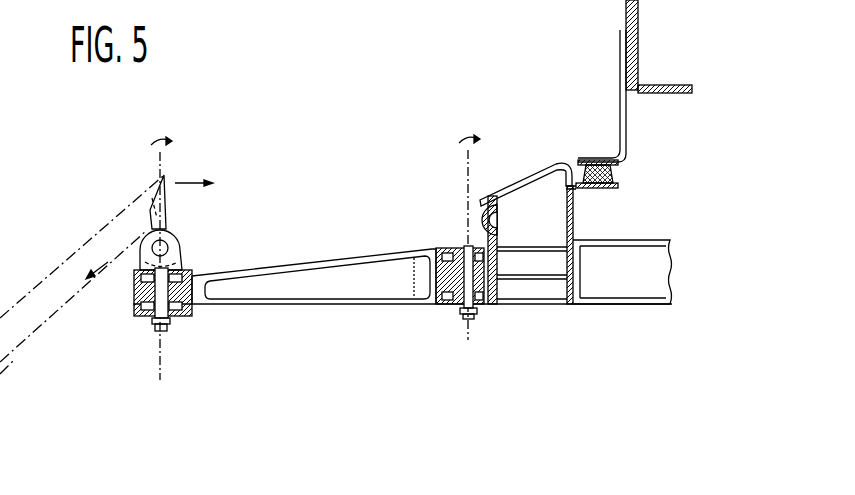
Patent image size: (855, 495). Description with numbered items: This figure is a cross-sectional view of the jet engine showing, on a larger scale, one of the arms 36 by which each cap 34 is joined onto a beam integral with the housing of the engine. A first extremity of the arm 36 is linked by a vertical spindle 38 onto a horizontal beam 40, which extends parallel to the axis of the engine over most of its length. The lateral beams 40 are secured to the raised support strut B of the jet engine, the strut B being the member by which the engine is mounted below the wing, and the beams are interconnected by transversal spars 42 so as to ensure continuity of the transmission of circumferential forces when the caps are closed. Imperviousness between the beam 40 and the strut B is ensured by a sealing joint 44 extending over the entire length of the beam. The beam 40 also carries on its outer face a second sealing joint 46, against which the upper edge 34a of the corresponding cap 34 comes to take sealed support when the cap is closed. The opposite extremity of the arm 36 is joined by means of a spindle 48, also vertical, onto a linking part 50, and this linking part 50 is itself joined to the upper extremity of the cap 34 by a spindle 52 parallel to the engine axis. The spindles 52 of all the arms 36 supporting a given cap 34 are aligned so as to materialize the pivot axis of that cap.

The cap 34 is at (6, 295).
The upper edge of the cap 34a is at (167, 200).
The spindle 52 is at (160, 246).
The linking part 50 is at (135, 298).
The spindle 48 is at (165, 293).
The arm 36 is at (352, 292).
The vertical spindle 38 is at (470, 248).
The second sealing joint 46 is at (477, 220).
The horizontal beam 40 is at (526, 297).
The transversal spar 42 is at (626, 282).
The sealing joint 44 is at (598, 162).
The strut B is at (623, 1).